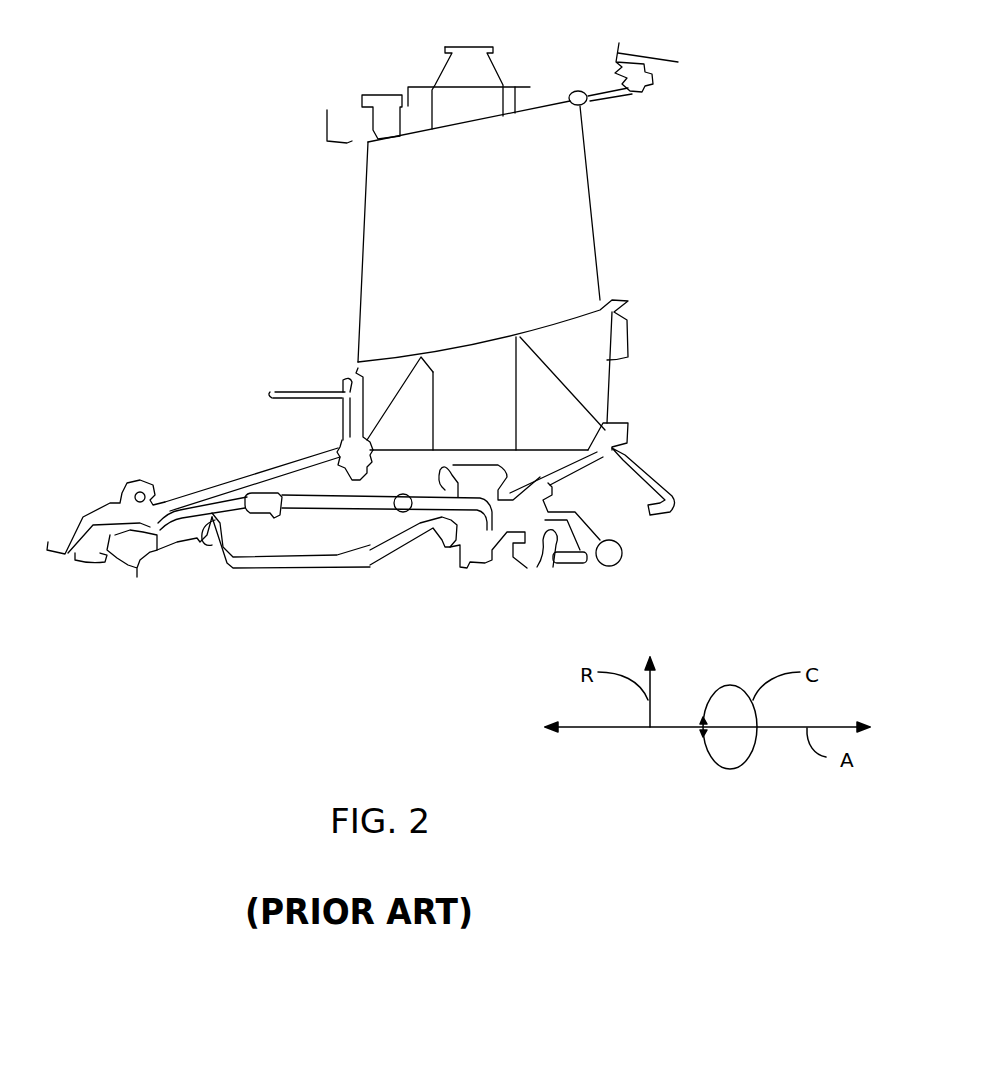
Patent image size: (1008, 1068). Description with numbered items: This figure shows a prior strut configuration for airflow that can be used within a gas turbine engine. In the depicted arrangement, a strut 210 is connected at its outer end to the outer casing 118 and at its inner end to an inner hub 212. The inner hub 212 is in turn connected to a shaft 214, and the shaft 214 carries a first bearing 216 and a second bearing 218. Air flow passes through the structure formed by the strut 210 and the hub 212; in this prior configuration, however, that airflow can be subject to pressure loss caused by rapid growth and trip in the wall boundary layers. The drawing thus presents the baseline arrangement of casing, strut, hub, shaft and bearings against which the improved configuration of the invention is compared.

The outer casing 118 is at (333, 138).
The strut 210 is at (604, 245).
The inner hub 212 is at (607, 395).
The shaft 214 is at (353, 508).
The first bearing 216 is at (135, 564).
The second bearing 218 is at (538, 578).